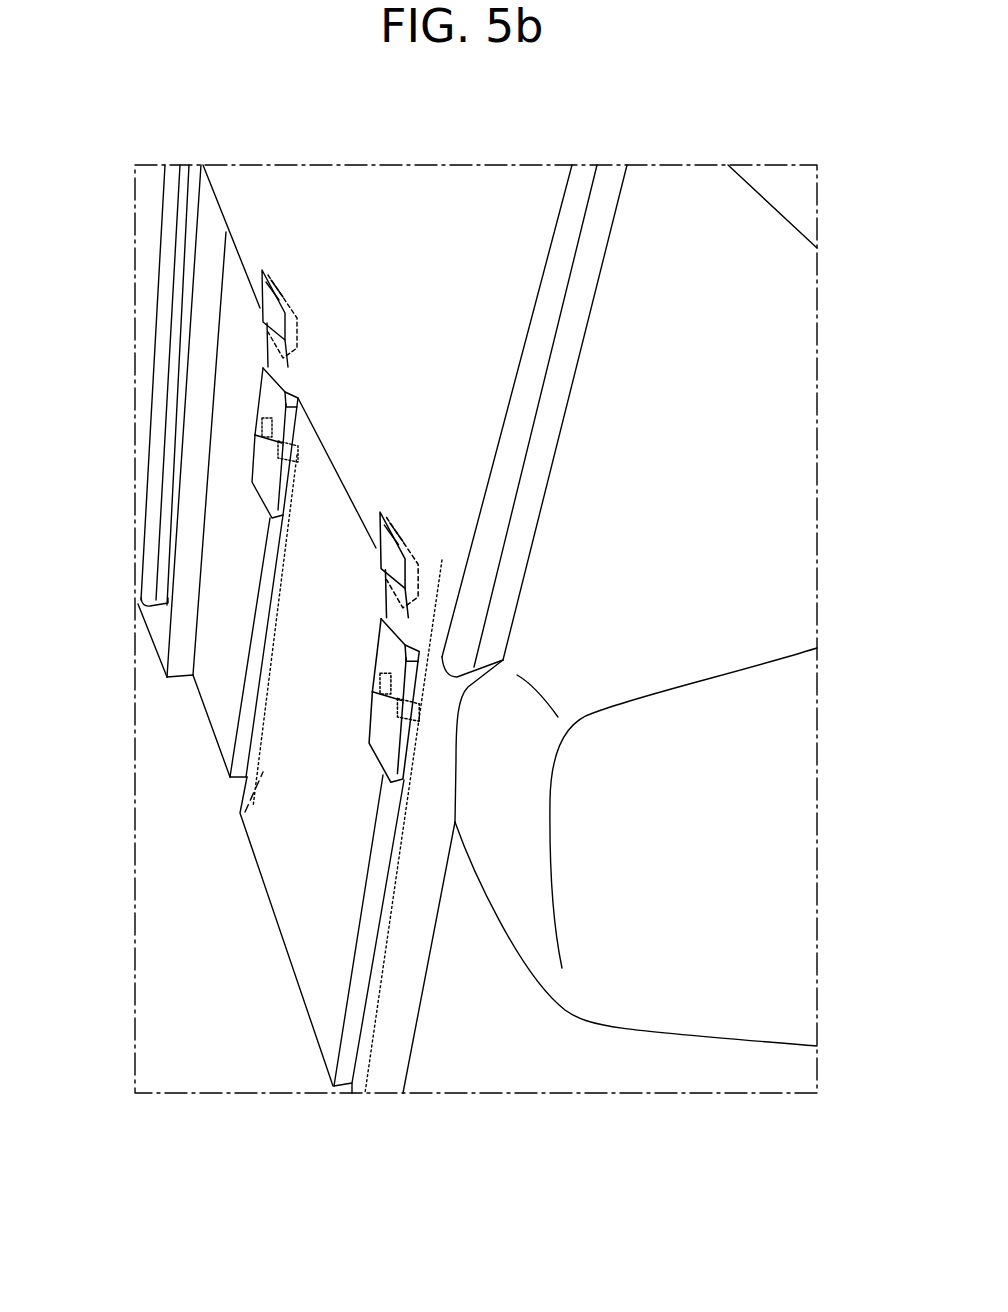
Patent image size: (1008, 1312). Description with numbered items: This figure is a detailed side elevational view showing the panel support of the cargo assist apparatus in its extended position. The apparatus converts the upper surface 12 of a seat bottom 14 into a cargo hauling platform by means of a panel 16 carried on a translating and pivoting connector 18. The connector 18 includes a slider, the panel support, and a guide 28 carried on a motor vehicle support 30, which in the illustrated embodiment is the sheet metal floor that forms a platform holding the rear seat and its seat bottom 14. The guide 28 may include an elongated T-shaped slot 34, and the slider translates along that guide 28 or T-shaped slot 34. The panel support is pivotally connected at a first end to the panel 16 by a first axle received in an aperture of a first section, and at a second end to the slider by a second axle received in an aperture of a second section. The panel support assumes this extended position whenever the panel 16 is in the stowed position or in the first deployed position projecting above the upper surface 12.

The upper surface 12 is at (700, 368).
The seat bottom 14 is at (740, 863).
The panel 16 is at (383, 207).
The translating and pivoting connector 18 is at (240, 425).
The guide 28 is at (215, 793).
The motor vehicle support 30 is at (215, 673).
The T-shaped slot 34 is at (267, 790).